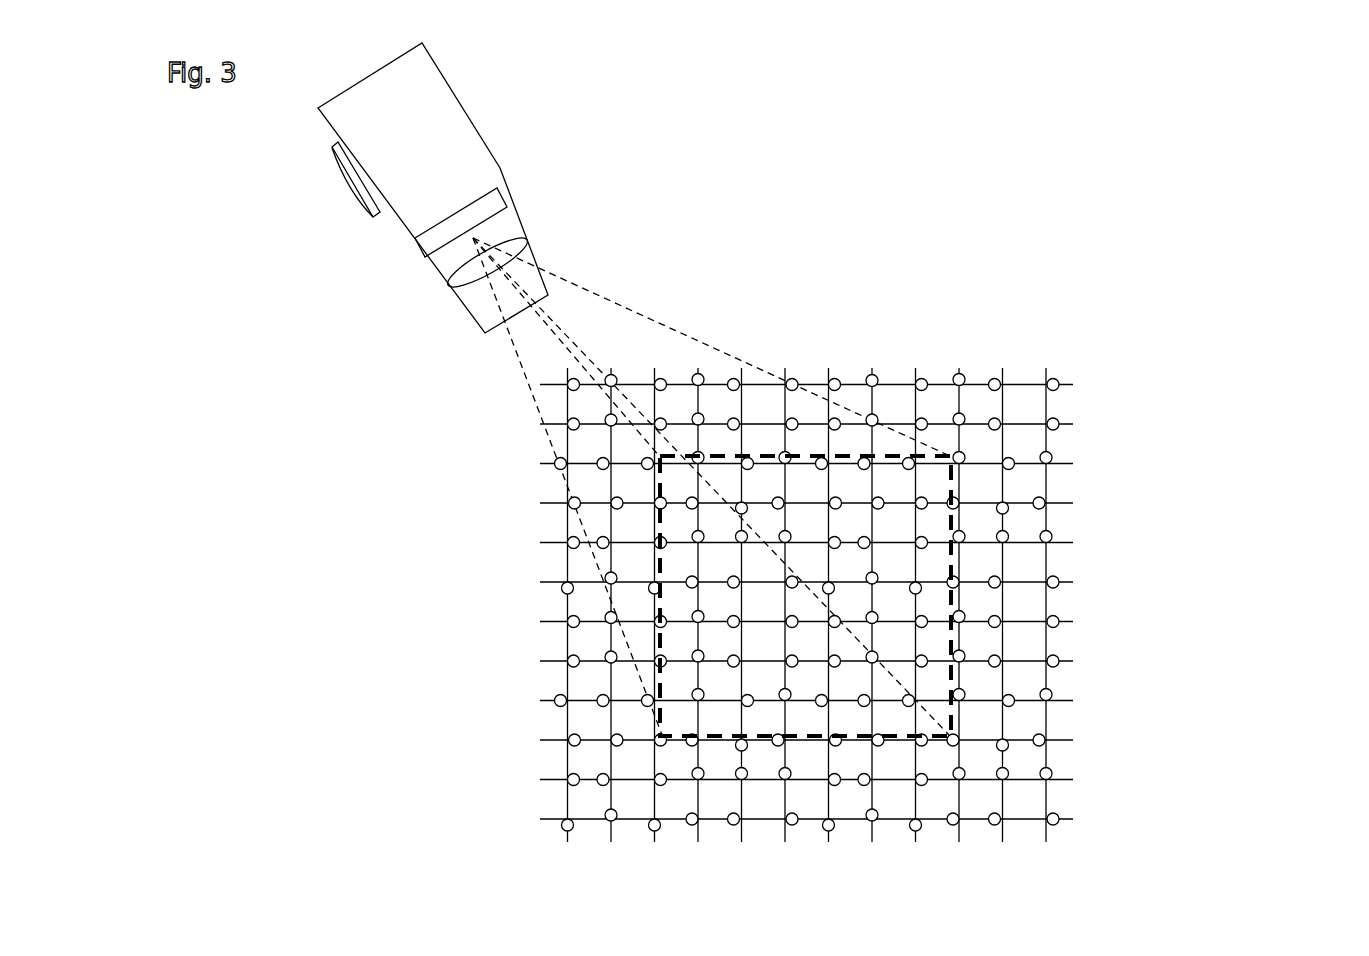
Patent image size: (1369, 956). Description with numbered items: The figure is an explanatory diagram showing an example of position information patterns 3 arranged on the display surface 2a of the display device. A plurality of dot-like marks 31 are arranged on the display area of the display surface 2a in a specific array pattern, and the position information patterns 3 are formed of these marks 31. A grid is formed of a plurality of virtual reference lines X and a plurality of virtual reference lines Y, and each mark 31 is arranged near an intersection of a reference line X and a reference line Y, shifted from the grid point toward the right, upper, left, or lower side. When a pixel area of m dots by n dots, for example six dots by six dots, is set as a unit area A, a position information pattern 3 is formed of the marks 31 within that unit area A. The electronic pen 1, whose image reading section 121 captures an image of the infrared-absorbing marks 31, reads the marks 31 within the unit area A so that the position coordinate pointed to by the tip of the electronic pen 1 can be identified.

The electronic pen 1 is at (470, 118).
The image reading section 121 is at (413, 248).
The display surface 2a is at (512, 632).
The position information pattern 3 is at (975, 352).
The mark 31 is at (915, 582).
The unit area A is at (805, 455).
The reference line X is at (1167, 378).
The reference line Y is at (1067, 840).